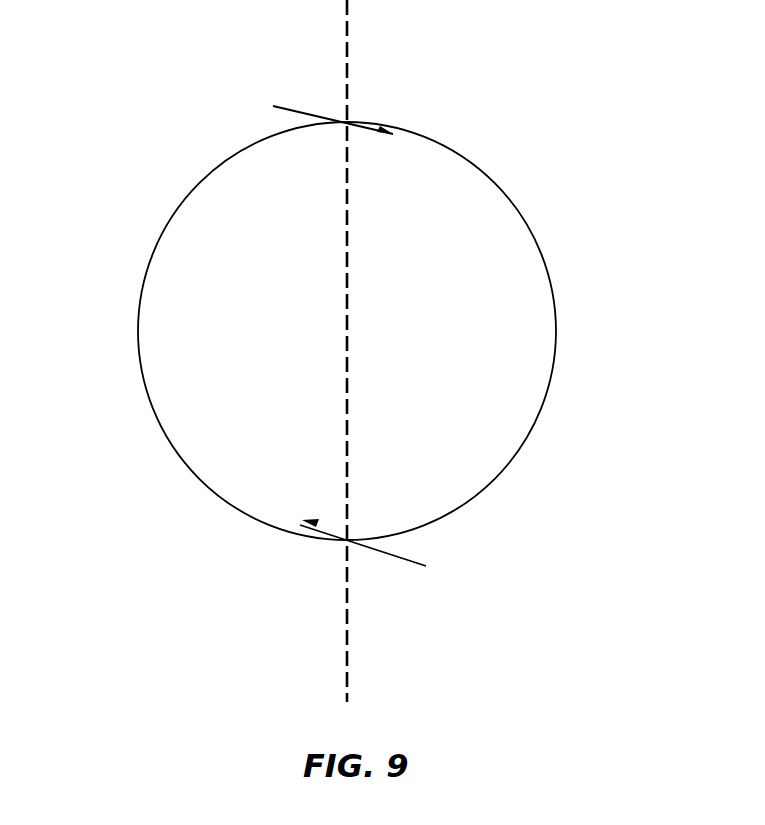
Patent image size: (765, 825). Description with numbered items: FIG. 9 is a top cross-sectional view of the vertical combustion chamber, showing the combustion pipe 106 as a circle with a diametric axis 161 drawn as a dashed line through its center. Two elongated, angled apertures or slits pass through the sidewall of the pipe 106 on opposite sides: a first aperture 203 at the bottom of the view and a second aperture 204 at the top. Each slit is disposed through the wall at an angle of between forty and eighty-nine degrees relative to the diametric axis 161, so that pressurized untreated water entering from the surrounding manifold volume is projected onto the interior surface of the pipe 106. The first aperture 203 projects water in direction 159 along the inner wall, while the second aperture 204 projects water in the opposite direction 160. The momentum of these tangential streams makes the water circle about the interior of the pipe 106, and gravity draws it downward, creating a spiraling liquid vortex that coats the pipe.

The combustion pipe 106 is at (556, 320).
The diametric axis 161 is at (345, 257).
The second aperture 204 is at (348, 121).
The first aperture 203 is at (346, 540).
The direction 160 is at (404, 117).
The direction 159 is at (298, 533).